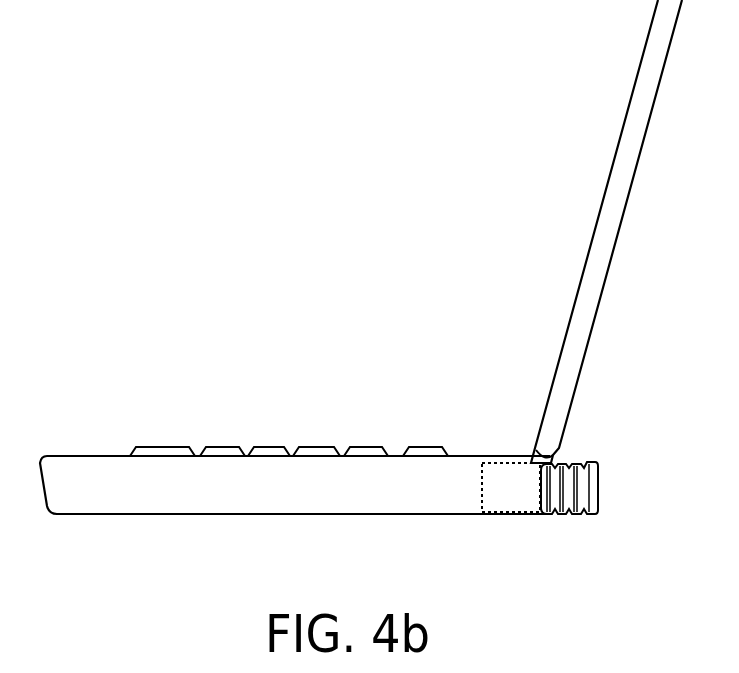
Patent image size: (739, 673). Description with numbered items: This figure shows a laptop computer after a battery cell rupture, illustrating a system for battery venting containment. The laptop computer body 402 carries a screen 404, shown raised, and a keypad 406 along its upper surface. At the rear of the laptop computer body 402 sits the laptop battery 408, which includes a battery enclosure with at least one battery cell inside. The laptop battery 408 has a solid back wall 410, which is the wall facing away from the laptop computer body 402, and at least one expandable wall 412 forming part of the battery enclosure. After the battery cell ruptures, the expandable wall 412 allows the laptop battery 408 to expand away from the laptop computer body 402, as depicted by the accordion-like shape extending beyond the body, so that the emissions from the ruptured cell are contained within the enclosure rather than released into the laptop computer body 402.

The laptop computer body 402 is at (382, 515).
The screen 404 is at (572, 310).
The keypad 406 is at (363, 447).
The laptop battery 408 is at (482, 505).
The solid back wall 410 is at (598, 488).
The expandable wall 412 is at (572, 514).